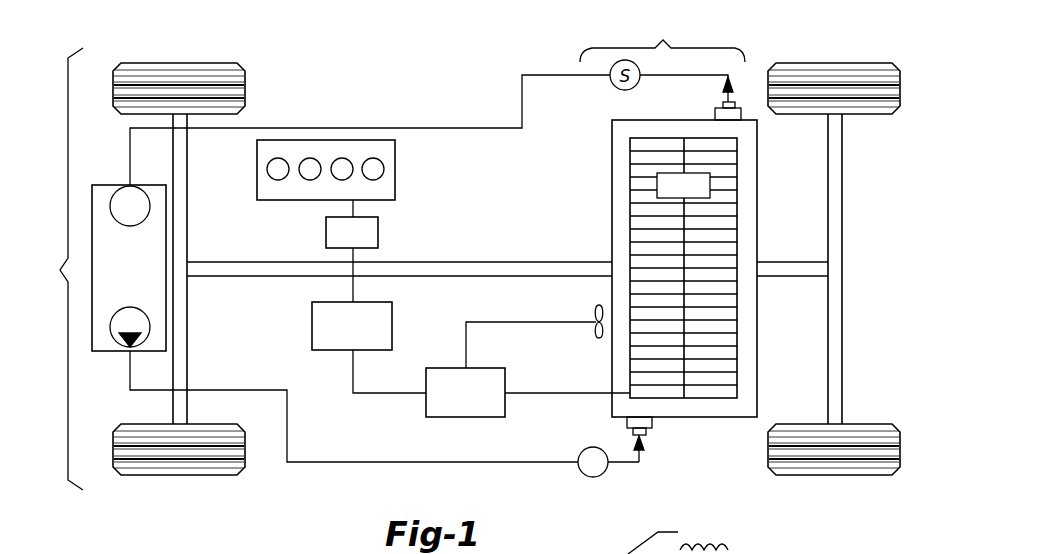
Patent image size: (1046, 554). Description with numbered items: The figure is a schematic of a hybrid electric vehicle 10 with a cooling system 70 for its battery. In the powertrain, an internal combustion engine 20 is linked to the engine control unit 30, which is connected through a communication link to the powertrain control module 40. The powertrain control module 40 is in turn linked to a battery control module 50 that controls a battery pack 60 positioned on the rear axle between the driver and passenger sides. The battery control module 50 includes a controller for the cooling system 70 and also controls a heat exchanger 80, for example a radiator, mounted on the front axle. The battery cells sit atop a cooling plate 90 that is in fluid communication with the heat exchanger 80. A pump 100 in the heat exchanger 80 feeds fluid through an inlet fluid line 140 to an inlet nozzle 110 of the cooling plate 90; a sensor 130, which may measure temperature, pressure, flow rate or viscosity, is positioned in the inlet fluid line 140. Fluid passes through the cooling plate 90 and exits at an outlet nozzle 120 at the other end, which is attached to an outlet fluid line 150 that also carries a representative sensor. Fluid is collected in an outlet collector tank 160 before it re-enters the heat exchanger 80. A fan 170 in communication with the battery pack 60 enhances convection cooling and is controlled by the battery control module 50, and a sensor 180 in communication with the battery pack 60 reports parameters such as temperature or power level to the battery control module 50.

The hybrid electric vehicle 10 is at (58, 269).
The internal combustion engine 20 is at (397, 170).
The engine control unit 30 is at (378, 234).
The powertrain control module 40 is at (312, 325).
The battery control module 50 is at (426, 405).
The battery pack 60 is at (737, 315).
The cooling system 70 is at (662, 36).
The heat exchanger 80 is at (104, 184).
The cooling plate 90 is at (735, 410).
The pump 100 is at (112, 345).
The inlet nozzle 110 is at (655, 422).
The outlet nozzle 120 is at (715, 114).
The sensor 130 is at (593, 477).
The inlet fluid line 140 is at (316, 464).
The outlet fluid line 150 is at (432, 127).
The outlet collector tank 160 is at (150, 207).
The fan 170 is at (596, 308).
The sensor 180 is at (710, 186).